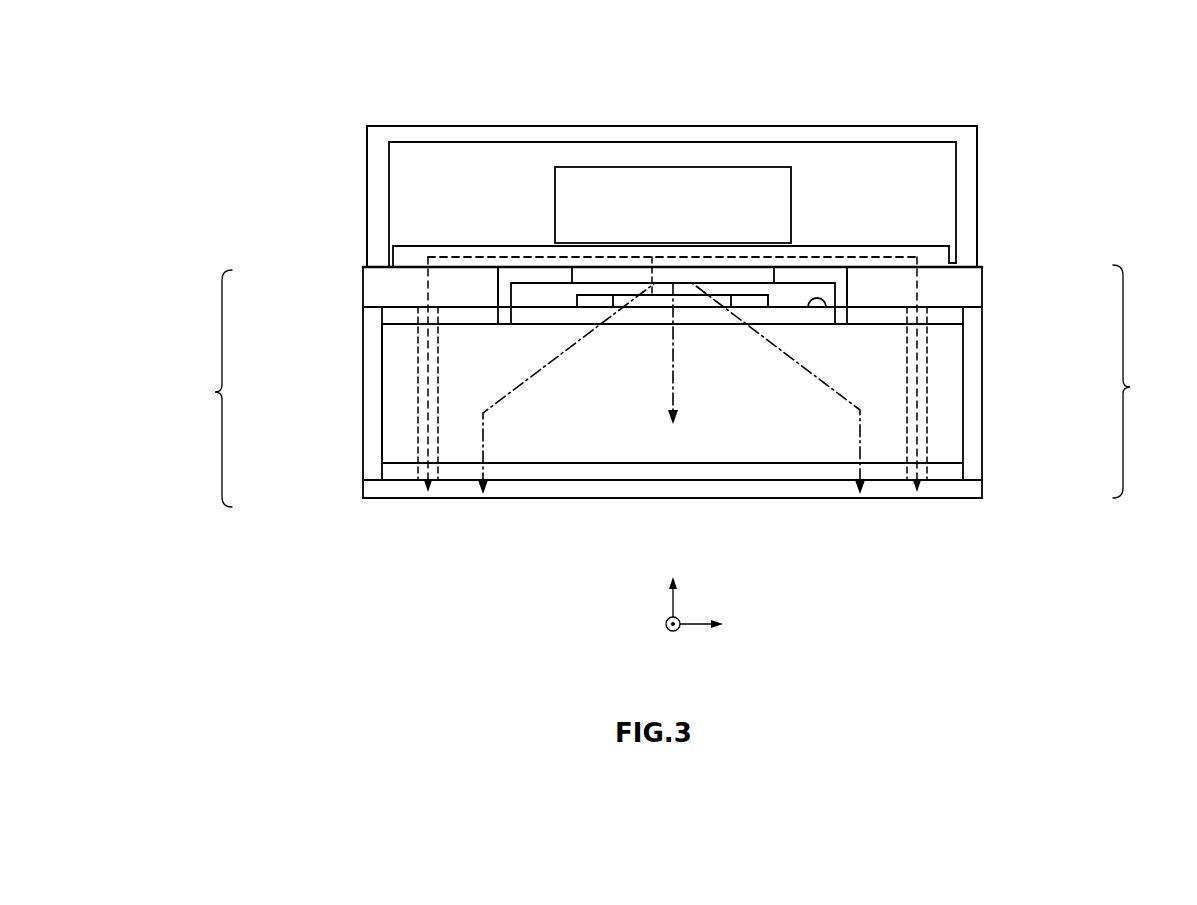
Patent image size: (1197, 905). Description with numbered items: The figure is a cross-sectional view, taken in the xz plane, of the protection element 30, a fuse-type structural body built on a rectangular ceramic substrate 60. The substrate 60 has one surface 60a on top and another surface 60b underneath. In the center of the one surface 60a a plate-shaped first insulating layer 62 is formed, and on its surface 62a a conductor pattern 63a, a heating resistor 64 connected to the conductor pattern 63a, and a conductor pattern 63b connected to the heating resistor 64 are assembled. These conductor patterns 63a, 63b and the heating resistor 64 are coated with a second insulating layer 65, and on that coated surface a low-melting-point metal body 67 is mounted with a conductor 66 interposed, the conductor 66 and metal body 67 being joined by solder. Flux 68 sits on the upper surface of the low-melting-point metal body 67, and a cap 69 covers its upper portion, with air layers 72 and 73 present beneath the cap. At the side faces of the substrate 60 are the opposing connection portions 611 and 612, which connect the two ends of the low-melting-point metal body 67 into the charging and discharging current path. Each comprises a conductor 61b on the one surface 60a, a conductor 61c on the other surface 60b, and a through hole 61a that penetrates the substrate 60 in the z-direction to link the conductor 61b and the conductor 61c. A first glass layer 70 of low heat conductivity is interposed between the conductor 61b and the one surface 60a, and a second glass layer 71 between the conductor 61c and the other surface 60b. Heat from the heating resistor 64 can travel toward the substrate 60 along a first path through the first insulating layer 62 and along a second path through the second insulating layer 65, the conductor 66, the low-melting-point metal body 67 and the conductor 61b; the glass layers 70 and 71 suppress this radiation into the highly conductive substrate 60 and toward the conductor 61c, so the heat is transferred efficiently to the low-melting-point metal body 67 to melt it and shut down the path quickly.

The protection element 30 is at (693, 50).
The cap 69 is at (486, 134).
The air layer 72 is at (900, 172).
The flux 68 is at (667, 185).
The low-melting-point metal body 67 is at (848, 253).
The conductor 66 is at (745, 273).
The air layer 73 is at (508, 273).
The conductor 61b is at (378, 288).
The first glass layer 70 is at (393, 317).
The through hole 61a is at (417, 388).
The second glass layer 71 is at (393, 472).
The conductor 61c is at (378, 488).
The connection portion 612 is at (195, 388).
The connection portion 611 is at (1149, 381).
The substrate 60 is at (558, 432).
The one surface of the substrate 60a is at (467, 327).
The other surface of the substrate 60b is at (447, 507).
The conductor pattern 63b is at (597, 300).
The conductor pattern 63a is at (742, 300).
The heating resistor 64 is at (657, 300).
The second insulating layer 65 is at (780, 300).
The first insulating layer 62 is at (802, 313).
The surface of the first insulating layer 62a is at (828, 300).